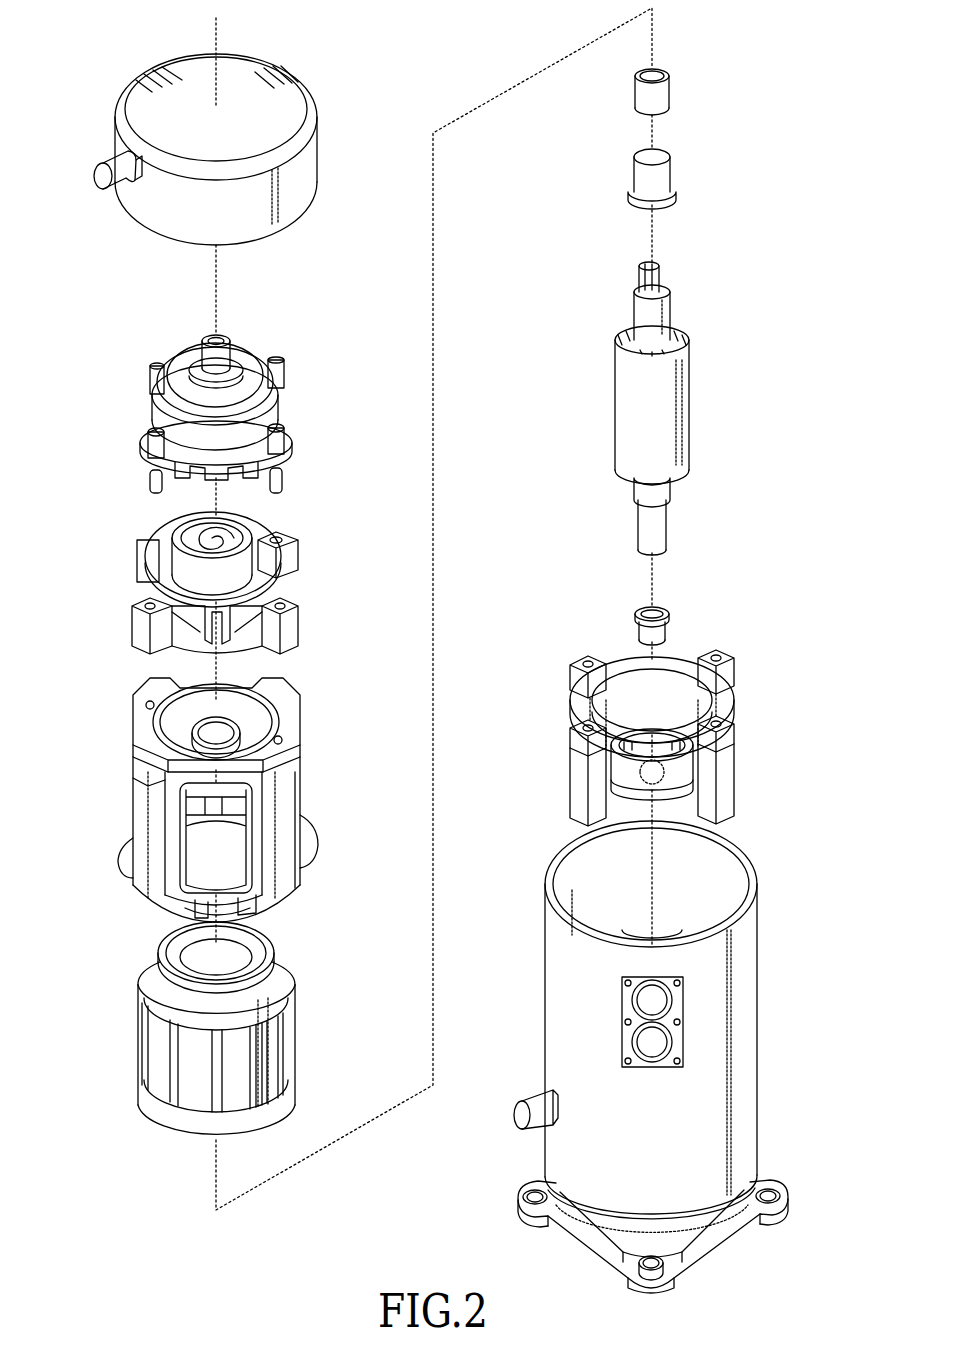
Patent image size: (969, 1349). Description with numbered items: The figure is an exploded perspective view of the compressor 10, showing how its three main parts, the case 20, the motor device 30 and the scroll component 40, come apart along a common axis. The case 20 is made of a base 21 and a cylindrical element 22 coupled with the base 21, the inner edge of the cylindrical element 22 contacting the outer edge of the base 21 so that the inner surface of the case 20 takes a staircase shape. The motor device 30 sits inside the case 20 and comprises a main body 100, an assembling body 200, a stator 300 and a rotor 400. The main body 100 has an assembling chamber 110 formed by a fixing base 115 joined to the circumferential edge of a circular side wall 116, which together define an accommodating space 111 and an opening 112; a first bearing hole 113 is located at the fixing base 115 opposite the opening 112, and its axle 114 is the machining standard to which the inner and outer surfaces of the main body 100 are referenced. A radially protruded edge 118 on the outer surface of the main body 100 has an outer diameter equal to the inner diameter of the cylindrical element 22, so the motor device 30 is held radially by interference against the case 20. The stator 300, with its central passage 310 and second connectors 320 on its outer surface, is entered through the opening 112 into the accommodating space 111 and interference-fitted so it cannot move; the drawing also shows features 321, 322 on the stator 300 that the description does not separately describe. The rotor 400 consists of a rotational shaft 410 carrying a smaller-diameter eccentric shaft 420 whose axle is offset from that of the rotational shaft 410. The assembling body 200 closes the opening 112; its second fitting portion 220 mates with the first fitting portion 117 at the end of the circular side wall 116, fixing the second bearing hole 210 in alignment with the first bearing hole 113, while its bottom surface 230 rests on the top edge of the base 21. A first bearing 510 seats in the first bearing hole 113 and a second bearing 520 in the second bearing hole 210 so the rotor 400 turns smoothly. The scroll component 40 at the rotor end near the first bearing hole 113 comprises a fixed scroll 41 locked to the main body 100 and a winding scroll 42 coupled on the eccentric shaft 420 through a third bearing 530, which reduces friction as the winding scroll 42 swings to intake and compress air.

The compressor 10 is at (82, 28).
The axle of the first bearing hole 114 is at (216, 37).
The scroll component 40 is at (166, 334).
The fixed scroll 41 is at (142, 413).
The winding scroll 42 is at (150, 556).
The motor device 30 is at (75, 665).
The main body 100 is at (128, 684).
The assembling chamber 110 is at (88, 740).
The accommodating space 111 is at (200, 855).
The opening 112 is at (245, 946).
The first bearing hole 113 is at (268, 700).
The fixing base 115 is at (135, 718).
The circular side wall 116 is at (135, 812).
The first fitting portion 117 is at (280, 905).
The radially protruded edge 118 is at (140, 778).
The stator 300 is at (126, 1030).
The passage 310 is at (283, 955).
The second connectors 320 is at (310, 1029).
The shoulder 321 is at (296, 1013).
The groove 322 is at (265, 1050).
The rotor 400 is at (712, 366).
The rotational shaft 410 is at (670, 311).
The eccentric shaft 420 is at (660, 276).
The first bearing 510 is at (672, 172).
The second bearing 520 is at (672, 626).
The third bearing 530 is at (668, 90).
The assembling body 200 is at (740, 650).
The second bearing hole 210 is at (728, 766).
The second fitting portion 220 is at (735, 742).
The bottom surface 230 is at (590, 819).
The case 20 is at (760, 830).
The base 21 is at (700, 1226).
The cylindrical element 22 is at (745, 1046).